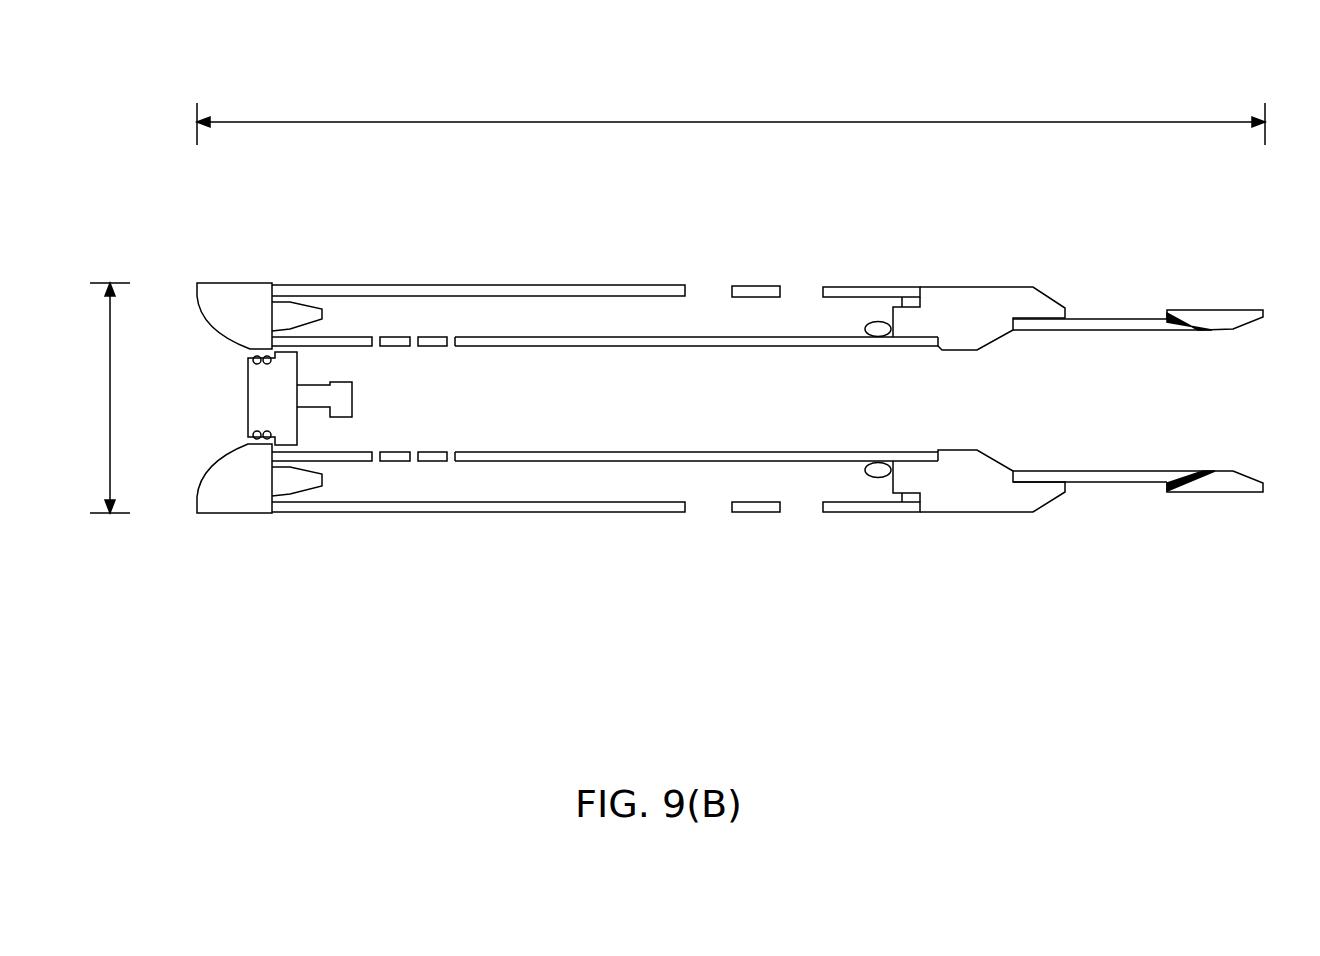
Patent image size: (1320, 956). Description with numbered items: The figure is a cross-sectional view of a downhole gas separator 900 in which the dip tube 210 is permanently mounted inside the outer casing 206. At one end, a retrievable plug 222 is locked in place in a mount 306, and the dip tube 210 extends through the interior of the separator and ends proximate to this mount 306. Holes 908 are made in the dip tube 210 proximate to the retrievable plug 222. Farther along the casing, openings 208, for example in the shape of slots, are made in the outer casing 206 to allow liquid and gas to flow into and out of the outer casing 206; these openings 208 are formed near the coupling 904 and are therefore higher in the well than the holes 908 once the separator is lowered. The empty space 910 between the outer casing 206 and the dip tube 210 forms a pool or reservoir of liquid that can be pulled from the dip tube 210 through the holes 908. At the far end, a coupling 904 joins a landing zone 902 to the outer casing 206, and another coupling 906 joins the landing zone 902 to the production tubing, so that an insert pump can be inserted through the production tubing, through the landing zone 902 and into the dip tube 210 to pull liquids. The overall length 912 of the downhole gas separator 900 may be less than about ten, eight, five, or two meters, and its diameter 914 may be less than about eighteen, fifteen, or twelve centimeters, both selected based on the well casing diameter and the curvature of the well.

The downhole gas separator 900 is at (670, 767).
The length 912 is at (612, 122).
The diameter 914 is at (112, 432).
The mount 306 is at (234, 290).
The retrievable plug 222 is at (247, 387).
The outer casing 206 is at (503, 285).
The holes 908 is at (450, 338).
The dip tube 210 is at (532, 461).
The empty space 910 is at (620, 490).
The openings 208 is at (803, 292).
The coupling 904 is at (965, 513).
The landing zone 902 is at (1213, 522).
The coupling 906 is at (1218, 492).